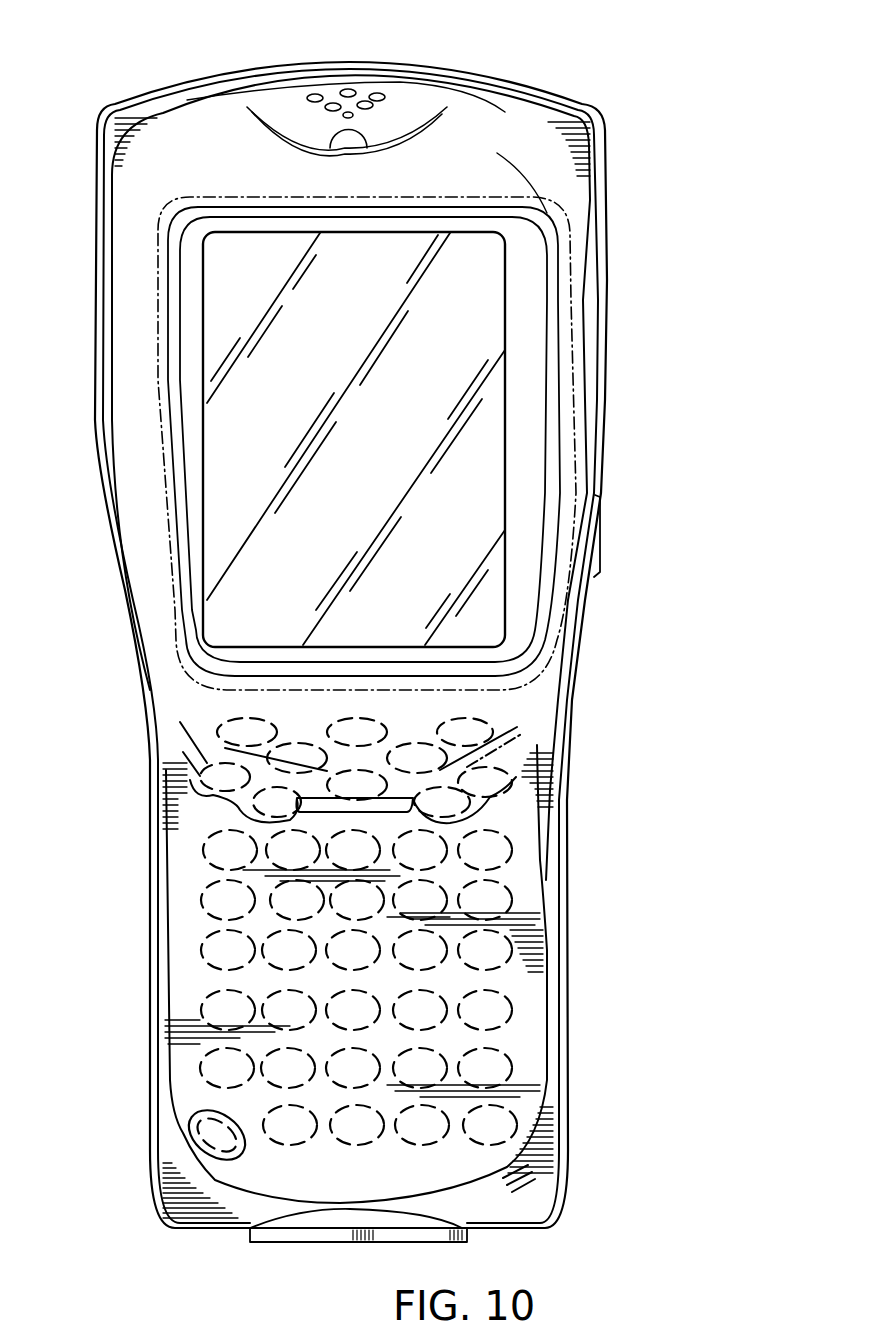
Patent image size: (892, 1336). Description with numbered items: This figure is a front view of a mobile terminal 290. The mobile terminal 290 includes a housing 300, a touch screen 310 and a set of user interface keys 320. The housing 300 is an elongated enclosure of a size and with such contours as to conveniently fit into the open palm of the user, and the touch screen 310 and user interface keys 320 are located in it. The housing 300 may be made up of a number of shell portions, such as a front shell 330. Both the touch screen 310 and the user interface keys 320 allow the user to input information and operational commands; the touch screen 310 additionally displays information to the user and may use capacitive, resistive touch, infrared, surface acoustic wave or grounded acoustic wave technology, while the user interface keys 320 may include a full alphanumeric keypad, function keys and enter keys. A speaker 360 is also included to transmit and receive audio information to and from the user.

The mobile terminal 290 is at (497, 36).
The housing 300 is at (590, 148).
The touch screen 310 is at (455, 497).
The set of user interface keys 320 is at (498, 732).
The front shell 330 is at (182, 1187).
The speaker 360 is at (353, 92).